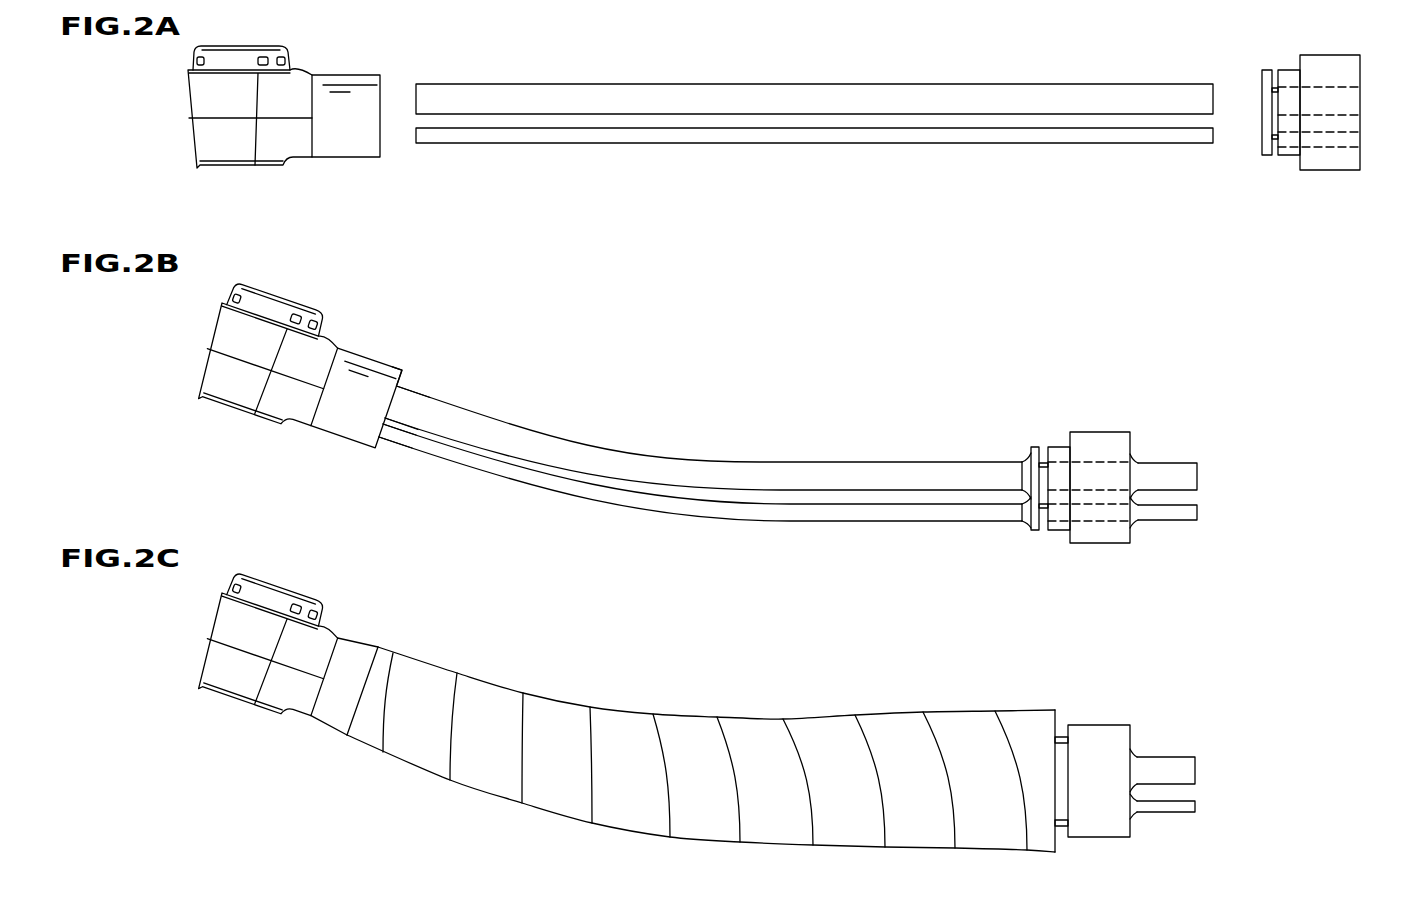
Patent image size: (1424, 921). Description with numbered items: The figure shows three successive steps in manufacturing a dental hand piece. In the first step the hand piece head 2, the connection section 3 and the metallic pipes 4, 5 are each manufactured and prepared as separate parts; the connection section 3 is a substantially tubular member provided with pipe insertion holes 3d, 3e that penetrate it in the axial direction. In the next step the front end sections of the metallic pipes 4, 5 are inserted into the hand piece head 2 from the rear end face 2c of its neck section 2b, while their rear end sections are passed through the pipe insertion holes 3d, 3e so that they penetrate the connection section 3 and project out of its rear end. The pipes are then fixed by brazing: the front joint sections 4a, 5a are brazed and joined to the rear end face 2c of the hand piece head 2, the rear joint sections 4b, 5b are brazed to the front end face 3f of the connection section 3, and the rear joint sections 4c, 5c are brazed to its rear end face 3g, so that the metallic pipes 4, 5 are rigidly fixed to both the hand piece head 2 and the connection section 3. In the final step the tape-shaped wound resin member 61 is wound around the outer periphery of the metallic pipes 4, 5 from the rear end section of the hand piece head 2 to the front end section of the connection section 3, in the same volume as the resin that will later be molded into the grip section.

In FIG. 2A, the hand piece head 2 is at (286, 140).
In FIG. 2B, the hand piece head 2 is at (337, 386).
In FIG. 2C, the hand piece head 2 is at (230, 673).
In FIG. 2B, the neck section 2b is at (335, 415).
In FIG. 2B, the rear end face 2c is at (402, 377).
In FIG. 2A, the connection section 3 is at (1341, 146).
In FIG. 2B, the connection section 3 is at (1081, 477).
In FIG. 2C, the connection section 3 is at (1112, 840).
In FIG. 2A, the pipe insertion hole 3d is at (1342, 87).
In FIG. 2A, the pipe insertion hole 3e is at (1353, 136).
In FIG. 2B, the front end face 3f is at (1030, 450).
In FIG. 2B, the rear end face 3g is at (1133, 438).
In FIG. 2A, the metallic pipe 4 is at (1000, 84).
In FIG. 2B, the metallic pipe 4 is at (824, 439).
In FIG. 2C, the metallic pipe 4 is at (1180, 763).
In FIG. 2B, the front joint section 4a is at (403, 402).
In FIG. 2B, the rear joint section 4b is at (1028, 478).
In FIG. 2B, the rear joint section 4c is at (1135, 478).
In FIG. 2A, the metallic pipe 5 is at (1000, 143).
In FIG. 2B, the metallic pipe 5 is at (811, 508).
In FIG. 2C, the metallic pipe 5 is at (1180, 812).
In FIG. 2B, the front joint section 5a is at (403, 433).
In FIG. 2B, the rear joint section 5b is at (1025, 510).
In FIG. 2B, the rear joint section 5c is at (1133, 512).
In FIG. 2C, the wound resin member 61 is at (630, 727).